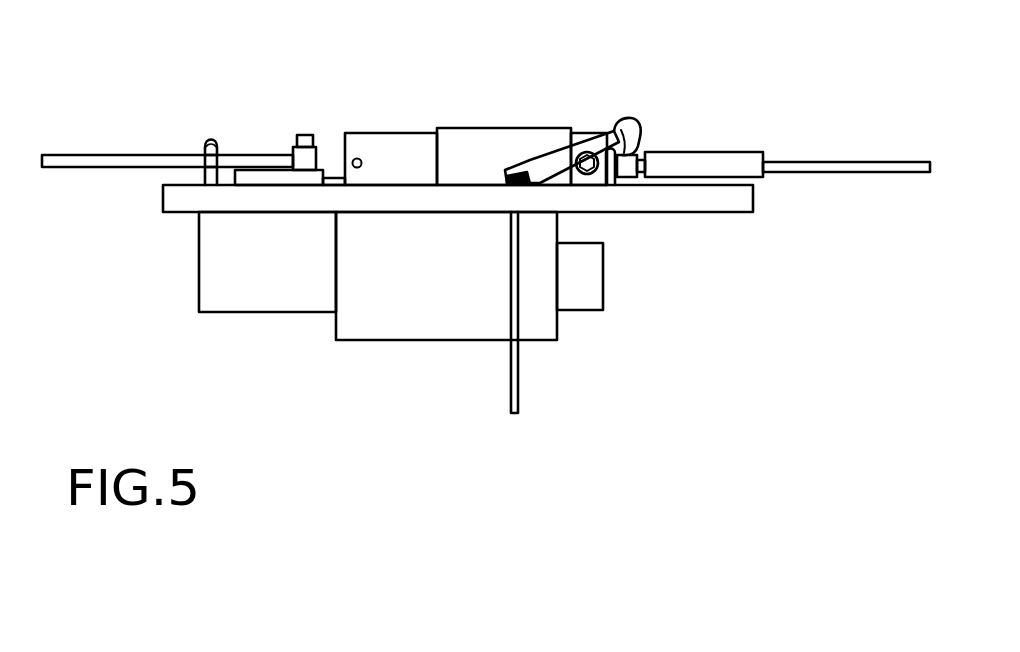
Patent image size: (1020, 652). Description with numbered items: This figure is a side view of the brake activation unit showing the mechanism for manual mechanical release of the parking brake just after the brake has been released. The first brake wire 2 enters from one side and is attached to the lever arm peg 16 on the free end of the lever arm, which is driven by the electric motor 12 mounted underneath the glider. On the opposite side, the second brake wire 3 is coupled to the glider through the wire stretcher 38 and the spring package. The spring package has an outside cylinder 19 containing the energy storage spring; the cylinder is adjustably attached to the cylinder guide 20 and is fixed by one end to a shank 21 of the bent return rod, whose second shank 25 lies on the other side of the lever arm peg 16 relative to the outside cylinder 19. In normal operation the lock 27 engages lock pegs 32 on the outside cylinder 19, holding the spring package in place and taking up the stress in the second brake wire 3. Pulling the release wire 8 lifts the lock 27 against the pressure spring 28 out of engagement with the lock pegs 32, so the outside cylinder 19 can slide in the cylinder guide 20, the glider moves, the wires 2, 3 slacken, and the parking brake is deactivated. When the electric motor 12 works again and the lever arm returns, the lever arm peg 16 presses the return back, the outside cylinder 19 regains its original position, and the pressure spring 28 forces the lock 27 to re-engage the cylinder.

The first brake wire 2 is at (72, 155).
The second brake wire 3 is at (830, 162).
The release wire 8 is at (517, 393).
The electric motor 12 is at (377, 328).
The lever arm peg 16 is at (305, 135).
The outside cylinder 19 is at (403, 136).
The cylinder guide 20 is at (468, 128).
The shank 21 is at (357, 160).
The second shank 25 is at (212, 137).
The lock 27 is at (642, 118).
The pressure spring 28 is at (506, 174).
The lock pegs 32 is at (623, 186).
The wire stretcher 38 is at (710, 160).